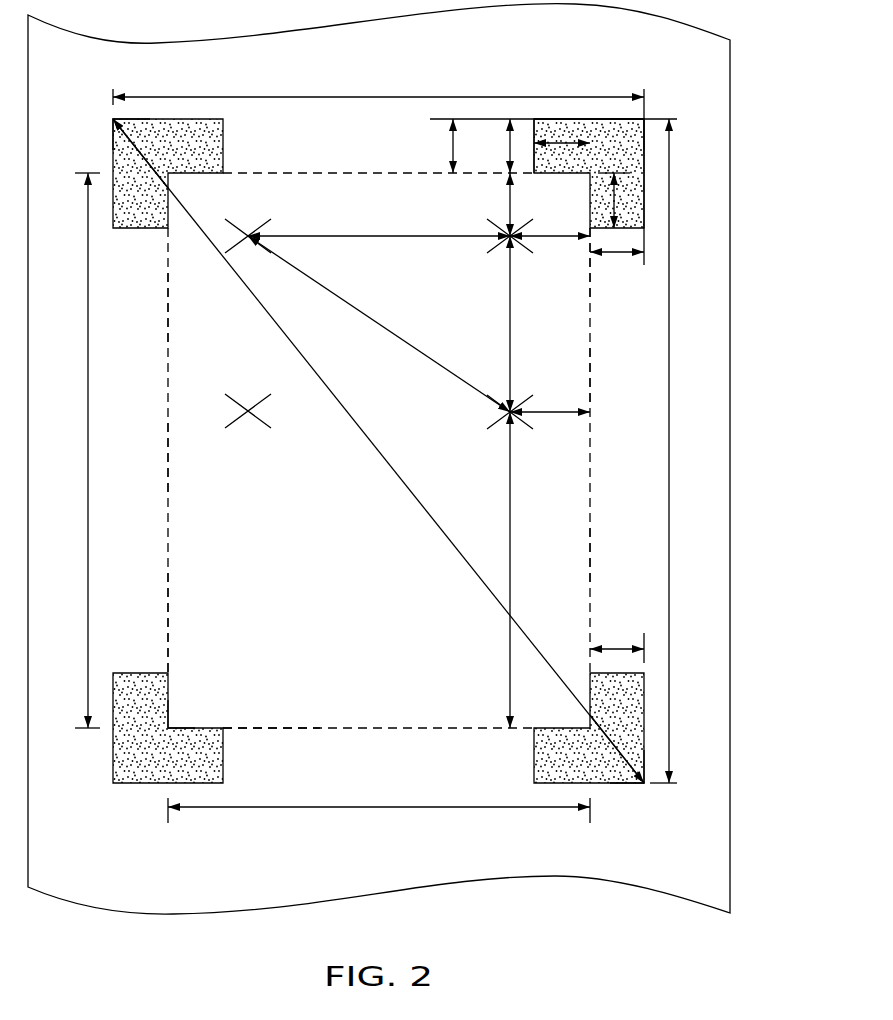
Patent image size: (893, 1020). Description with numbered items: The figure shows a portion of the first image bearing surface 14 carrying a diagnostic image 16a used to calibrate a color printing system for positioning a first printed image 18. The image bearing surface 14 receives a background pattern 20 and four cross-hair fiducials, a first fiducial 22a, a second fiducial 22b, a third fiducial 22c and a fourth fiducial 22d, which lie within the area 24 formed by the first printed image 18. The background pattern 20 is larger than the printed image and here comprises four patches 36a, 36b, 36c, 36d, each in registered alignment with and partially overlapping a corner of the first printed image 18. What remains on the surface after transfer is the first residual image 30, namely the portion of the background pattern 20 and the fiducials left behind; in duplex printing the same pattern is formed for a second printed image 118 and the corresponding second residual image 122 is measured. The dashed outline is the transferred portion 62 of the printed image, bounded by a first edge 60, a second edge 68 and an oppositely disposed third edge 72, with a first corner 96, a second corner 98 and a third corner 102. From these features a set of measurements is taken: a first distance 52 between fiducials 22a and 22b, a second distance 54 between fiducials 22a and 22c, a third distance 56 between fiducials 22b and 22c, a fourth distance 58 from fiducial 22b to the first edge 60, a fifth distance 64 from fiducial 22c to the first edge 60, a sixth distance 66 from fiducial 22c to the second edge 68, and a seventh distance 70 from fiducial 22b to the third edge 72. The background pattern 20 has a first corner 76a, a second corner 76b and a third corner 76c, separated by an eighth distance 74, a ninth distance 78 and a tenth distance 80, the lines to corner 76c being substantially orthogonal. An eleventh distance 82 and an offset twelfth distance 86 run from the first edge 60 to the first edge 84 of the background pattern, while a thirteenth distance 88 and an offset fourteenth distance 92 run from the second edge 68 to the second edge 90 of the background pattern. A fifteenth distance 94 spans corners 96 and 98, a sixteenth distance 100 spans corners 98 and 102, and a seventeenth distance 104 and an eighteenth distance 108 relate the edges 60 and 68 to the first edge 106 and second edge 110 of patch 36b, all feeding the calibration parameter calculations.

The first image bearing surface 14 is at (731, 97).
The diagnostic image 16a is at (158, 522).
The first printed image 18 is at (601, 560).
The background pattern 20 is at (106, 829).
The first fiducial 22a is at (258, 226).
The second fiducial 22b is at (517, 420).
The third fiducial 22c is at (502, 232).
The fourth fiducial 22d is at (258, 422).
The area formed by first printed image 24 is at (278, 710).
The first residual image 30 is at (193, 335).
The patch 36a is at (200, 133).
The patch 36b is at (605, 130).
The patch 36c is at (122, 760).
The patch 36d is at (562, 772).
The first distance 52 is at (375, 322).
The second distance 54 is at (383, 234).
The third distance 56 is at (512, 325).
The fourth distance 58 is at (556, 410).
The first edge of transferred portion 60 is at (592, 440).
The transferred portion of first printed image 62 is at (158, 593).
The fifth distance 64 is at (560, 240).
The sixth distance 66 is at (512, 205).
The second edge of transferred portion 68 is at (355, 172).
The seventh distance 70 is at (512, 535).
The third edge of transferred portion 72 is at (375, 729).
The eighth distance 74 is at (385, 462).
The first corner of background pattern 76a is at (111, 116).
The second corner of background pattern 76b is at (648, 788).
The third corner of background pattern 76c is at (647, 116).
The ninth distance 78 is at (381, 95).
The tenth distance 80 is at (671, 430).
The eleventh distance 82 is at (620, 258).
The first edge of background pattern 84 is at (646, 190).
The twelfth distance 86 is at (618, 645).
The thirteenth distance 88 is at (503, 150).
The second edge of background pattern 90 is at (578, 118).
The fourteenth distance 92 is at (451, 143).
The fifteenth distance 94 is at (371, 808).
The first corner of transferred portion 96 is at (593, 738).
The second corner of transferred portion 98 is at (166, 738).
The sixteenth distance 100 is at (88, 452).
The third corner of transferred portion 102 is at (163, 163).
The seventeenth distance 104 is at (615, 201).
The first edge of patch 106 is at (622, 229).
The eighteenth distance 108 is at (560, 141).
The second edge of patch 110 is at (535, 140).
The second printed image 118 is at (601, 380).
The second residual image 122 is at (192, 468).